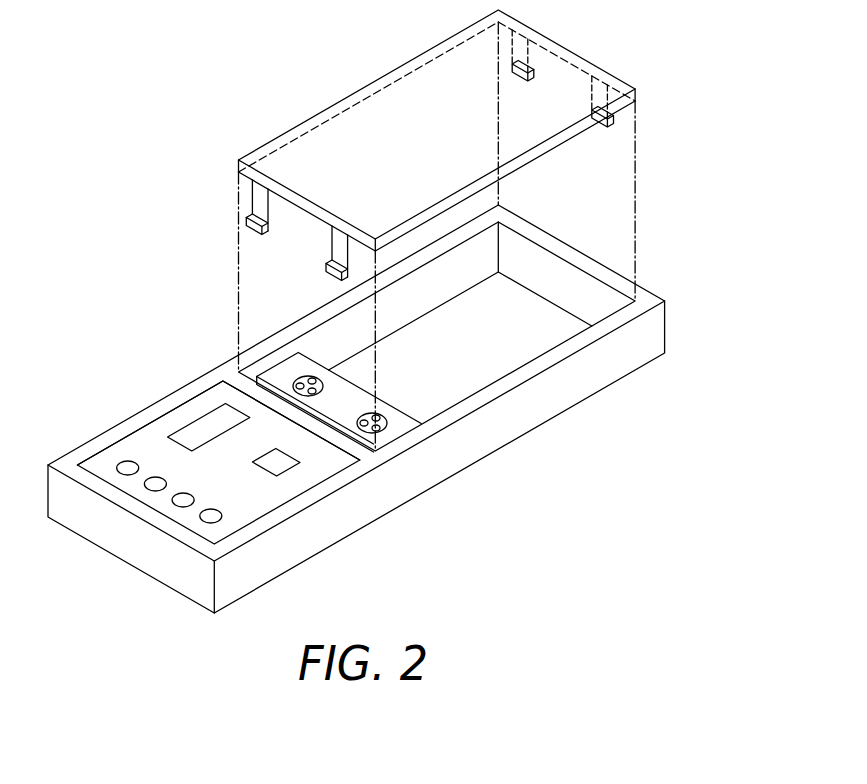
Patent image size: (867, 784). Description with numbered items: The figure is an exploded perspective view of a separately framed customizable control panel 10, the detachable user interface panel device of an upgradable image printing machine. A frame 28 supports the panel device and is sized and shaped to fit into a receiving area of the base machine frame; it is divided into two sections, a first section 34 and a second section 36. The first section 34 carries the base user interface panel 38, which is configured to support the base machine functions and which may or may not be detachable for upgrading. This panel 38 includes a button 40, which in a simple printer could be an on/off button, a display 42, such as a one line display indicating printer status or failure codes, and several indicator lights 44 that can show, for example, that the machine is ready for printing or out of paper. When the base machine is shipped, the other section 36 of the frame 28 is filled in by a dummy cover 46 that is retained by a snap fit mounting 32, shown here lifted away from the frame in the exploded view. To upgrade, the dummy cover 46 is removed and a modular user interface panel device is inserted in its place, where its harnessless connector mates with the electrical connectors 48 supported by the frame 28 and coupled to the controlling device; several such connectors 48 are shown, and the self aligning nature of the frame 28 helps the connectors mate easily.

The customizable control panel 10 is at (378, 307).
The frame 28 is at (653, 286).
The snap-fit mounting 32 is at (340, 253).
The first section 34 is at (170, 402).
The second section 36 is at (405, 268).
The user interface panel 38 is at (218, 474).
The button 40 is at (283, 463).
The display 42 is at (220, 413).
The indicator lights 44 is at (167, 483).
The dummy cover 46 is at (523, 37).
The electrical connector 48 is at (323, 386).